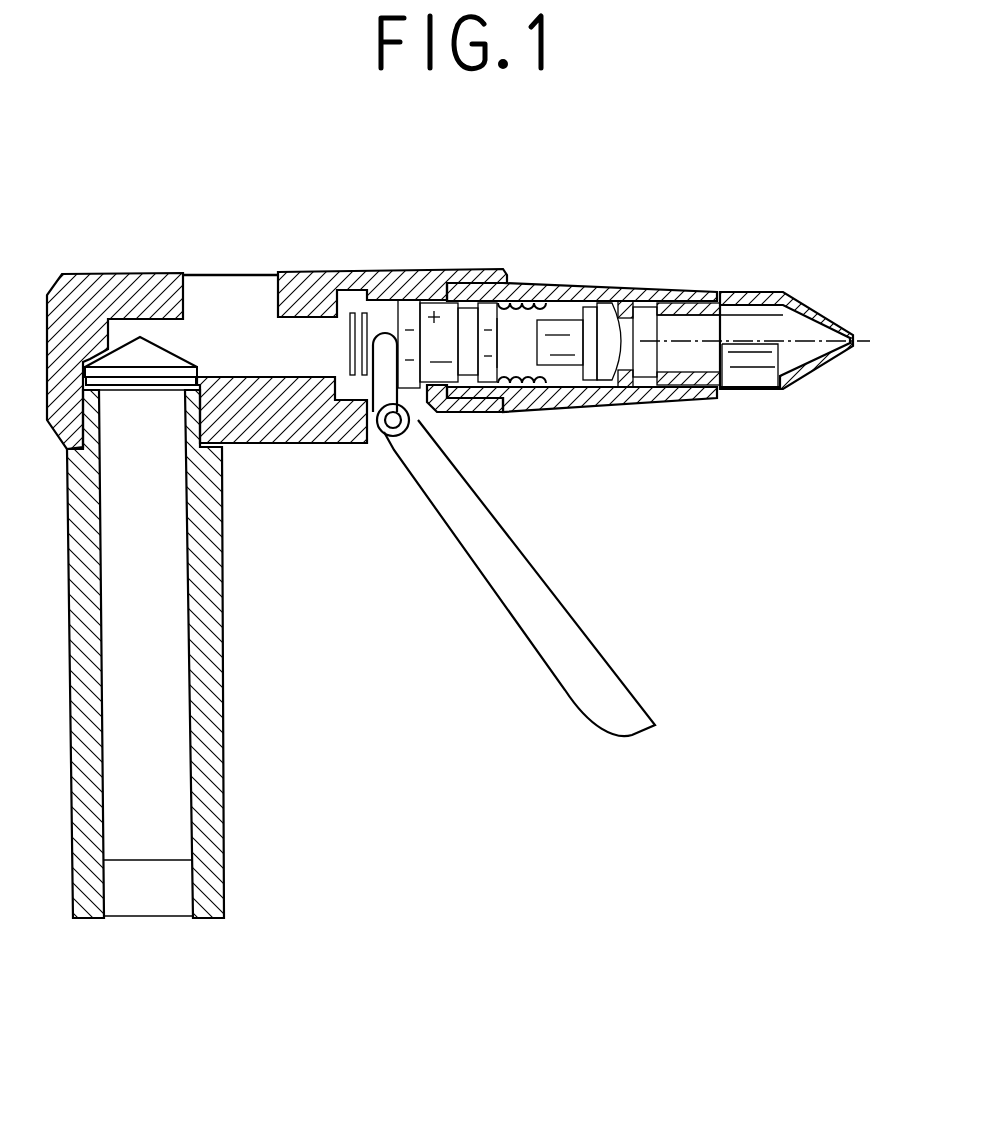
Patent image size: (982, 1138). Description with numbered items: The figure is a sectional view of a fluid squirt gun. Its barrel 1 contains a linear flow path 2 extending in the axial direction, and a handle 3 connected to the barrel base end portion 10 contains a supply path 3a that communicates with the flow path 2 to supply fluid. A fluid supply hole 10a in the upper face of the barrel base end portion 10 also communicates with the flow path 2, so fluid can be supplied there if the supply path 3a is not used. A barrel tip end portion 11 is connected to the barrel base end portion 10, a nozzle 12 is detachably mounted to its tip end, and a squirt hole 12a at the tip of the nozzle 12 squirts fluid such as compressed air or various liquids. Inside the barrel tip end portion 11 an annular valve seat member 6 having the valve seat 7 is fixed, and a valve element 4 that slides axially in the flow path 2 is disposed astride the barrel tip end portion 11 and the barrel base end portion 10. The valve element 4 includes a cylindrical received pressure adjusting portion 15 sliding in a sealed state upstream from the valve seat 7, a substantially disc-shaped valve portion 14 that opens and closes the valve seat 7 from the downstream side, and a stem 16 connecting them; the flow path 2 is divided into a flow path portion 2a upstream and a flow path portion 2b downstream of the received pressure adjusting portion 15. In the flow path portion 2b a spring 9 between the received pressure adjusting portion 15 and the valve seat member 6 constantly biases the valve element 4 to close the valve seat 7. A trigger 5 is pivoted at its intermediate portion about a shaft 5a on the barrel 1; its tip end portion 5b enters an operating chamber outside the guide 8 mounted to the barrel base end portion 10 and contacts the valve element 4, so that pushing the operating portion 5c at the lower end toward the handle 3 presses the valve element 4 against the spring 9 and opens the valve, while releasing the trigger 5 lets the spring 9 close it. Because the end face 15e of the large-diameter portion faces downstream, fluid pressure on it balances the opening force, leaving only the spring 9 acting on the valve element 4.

The barrel 1 is at (456, 242).
The flow path 2 is at (211, 330).
The flow path portion upstream from the received pressure adjusting portion 2a is at (328, 352).
The flow path portion downstream from the received pressure adjusting portion 2b is at (517, 412).
The handle 3 is at (207, 781).
The supply path 3a is at (176, 696).
The valve element 4 is at (628, 287).
The trigger 5 is at (488, 481).
The shaft 5a is at (378, 445).
The tip end portion of the trigger 5b is at (390, 340).
The operating portion 5c is at (548, 660).
The valve seat member 6 is at (568, 293).
The valve seat 7 is at (608, 406).
The guide 8 is at (370, 300).
The spring 9 is at (542, 406).
The barrel base end portion 10 is at (102, 290).
The fluid supply hole 10a is at (227, 300).
The barrel tip end portion 11 is at (653, 292).
The nozzle 12 is at (793, 305).
The squirt hole 12a is at (856, 333).
The valve portion 14 is at (608, 290).
The received pressure adjusting portion 15 is at (434, 316).
The end face of the large-diameter portion 15e is at (507, 297).
The stem 16 is at (540, 295).